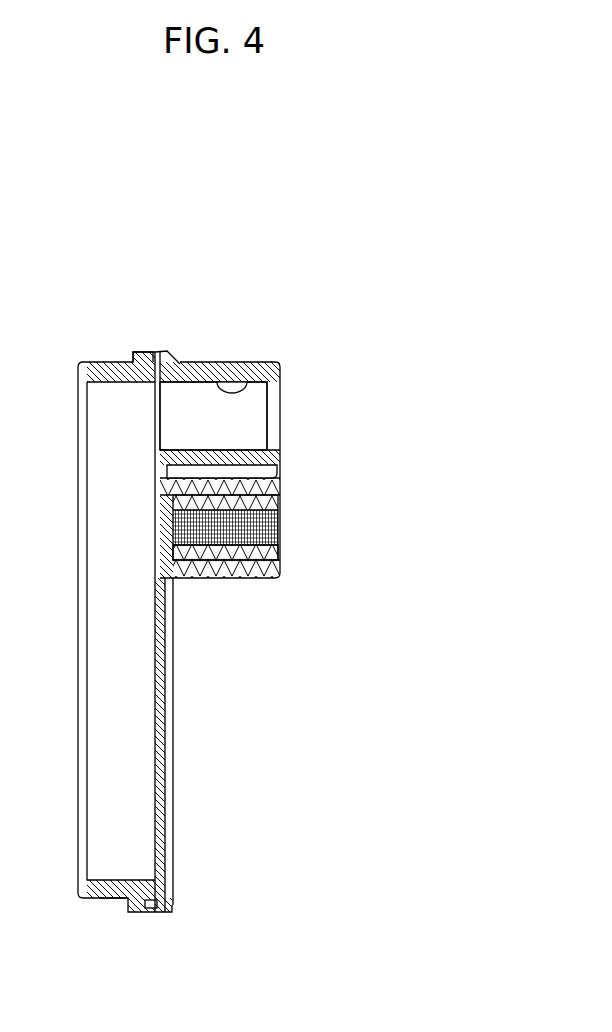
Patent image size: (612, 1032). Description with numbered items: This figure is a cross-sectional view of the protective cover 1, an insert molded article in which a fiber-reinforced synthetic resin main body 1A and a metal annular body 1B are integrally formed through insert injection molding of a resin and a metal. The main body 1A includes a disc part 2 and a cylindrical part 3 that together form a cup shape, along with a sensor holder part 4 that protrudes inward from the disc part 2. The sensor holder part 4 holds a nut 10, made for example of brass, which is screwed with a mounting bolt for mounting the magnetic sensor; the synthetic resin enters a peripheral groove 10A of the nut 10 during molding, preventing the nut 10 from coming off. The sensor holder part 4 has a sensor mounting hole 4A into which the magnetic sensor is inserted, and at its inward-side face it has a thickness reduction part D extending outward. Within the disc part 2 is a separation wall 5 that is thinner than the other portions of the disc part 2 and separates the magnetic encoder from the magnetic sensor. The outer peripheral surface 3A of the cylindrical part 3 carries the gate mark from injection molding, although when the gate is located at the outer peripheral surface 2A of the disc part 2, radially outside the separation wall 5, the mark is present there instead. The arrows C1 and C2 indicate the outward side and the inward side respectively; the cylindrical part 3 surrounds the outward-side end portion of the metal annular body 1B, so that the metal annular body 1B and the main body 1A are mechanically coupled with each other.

The protective cover 1 is at (305, 407).
The main body 1A is at (373, 647).
The metal annular body 1B is at (110, 900).
The disc part 2 is at (176, 713).
The outer peripheral surface of the disc part 2A is at (160, 350).
The cylindrical part 3 is at (152, 915).
The outer peripheral surface of the cylindrical part 3A is at (140, 350).
The sensor holder part 4 is at (246, 592).
The sensor mounting hole 4A is at (247, 378).
The separation wall 5 is at (160, 420).
The nut 10 is at (280, 557).
The peripheral groove 10A is at (235, 560).
The thickness reduction part D is at (280, 468).
The outward-side direction arrow C1 is at (143, 248).
The inward-side direction arrow C2 is at (261, 248).